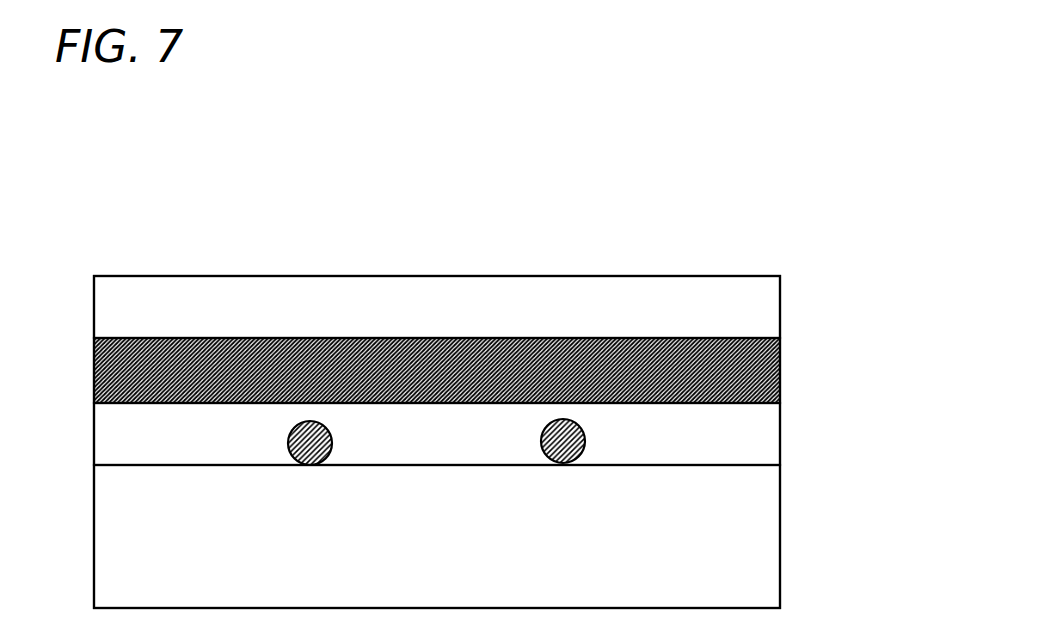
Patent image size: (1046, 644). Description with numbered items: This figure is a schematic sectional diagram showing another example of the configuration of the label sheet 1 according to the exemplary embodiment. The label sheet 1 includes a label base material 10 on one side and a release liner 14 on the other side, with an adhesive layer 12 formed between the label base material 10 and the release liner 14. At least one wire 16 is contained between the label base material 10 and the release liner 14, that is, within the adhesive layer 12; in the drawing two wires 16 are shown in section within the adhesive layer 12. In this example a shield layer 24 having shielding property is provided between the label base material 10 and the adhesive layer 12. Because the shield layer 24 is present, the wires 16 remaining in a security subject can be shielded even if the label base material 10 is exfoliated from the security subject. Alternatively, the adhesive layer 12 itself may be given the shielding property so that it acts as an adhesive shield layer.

The label sheet 1 is at (452, 227).
The label base material 10 is at (782, 310).
The shield layer 24 is at (782, 363).
The adhesive layer 12 is at (782, 432).
The release liner 14 is at (782, 542).
The wire 16 is at (333, 437).